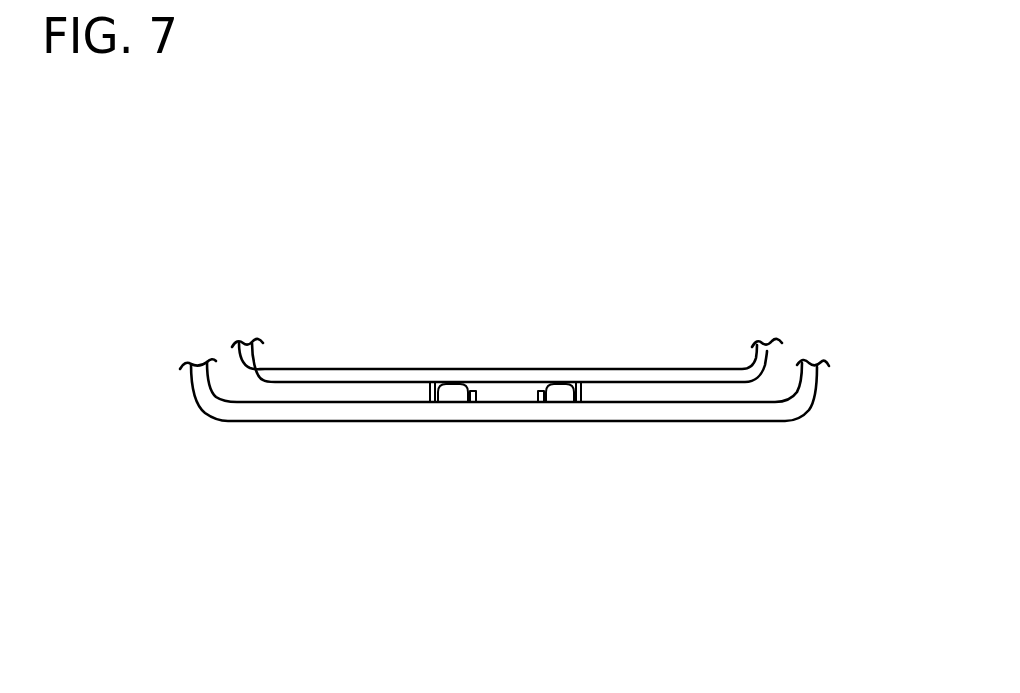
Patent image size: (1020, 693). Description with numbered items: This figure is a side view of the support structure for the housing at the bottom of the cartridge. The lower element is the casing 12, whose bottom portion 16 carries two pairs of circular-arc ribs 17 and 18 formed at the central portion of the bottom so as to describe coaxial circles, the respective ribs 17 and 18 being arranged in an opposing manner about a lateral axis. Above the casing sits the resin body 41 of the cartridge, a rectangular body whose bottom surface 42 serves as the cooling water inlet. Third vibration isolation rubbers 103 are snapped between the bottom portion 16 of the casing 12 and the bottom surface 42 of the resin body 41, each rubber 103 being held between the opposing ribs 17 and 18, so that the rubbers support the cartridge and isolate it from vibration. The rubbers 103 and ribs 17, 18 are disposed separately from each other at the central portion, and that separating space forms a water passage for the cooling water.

The casing 12 is at (753, 422).
The bottom portion 16 is at (312, 421).
The circular-arc rib 17 is at (480, 396).
The circular-arc rib 18 is at (428, 388).
The resin body 41 is at (668, 372).
The bottom surface 42 is at (652, 385).
The third vibration isolation rubber 103 is at (455, 391).